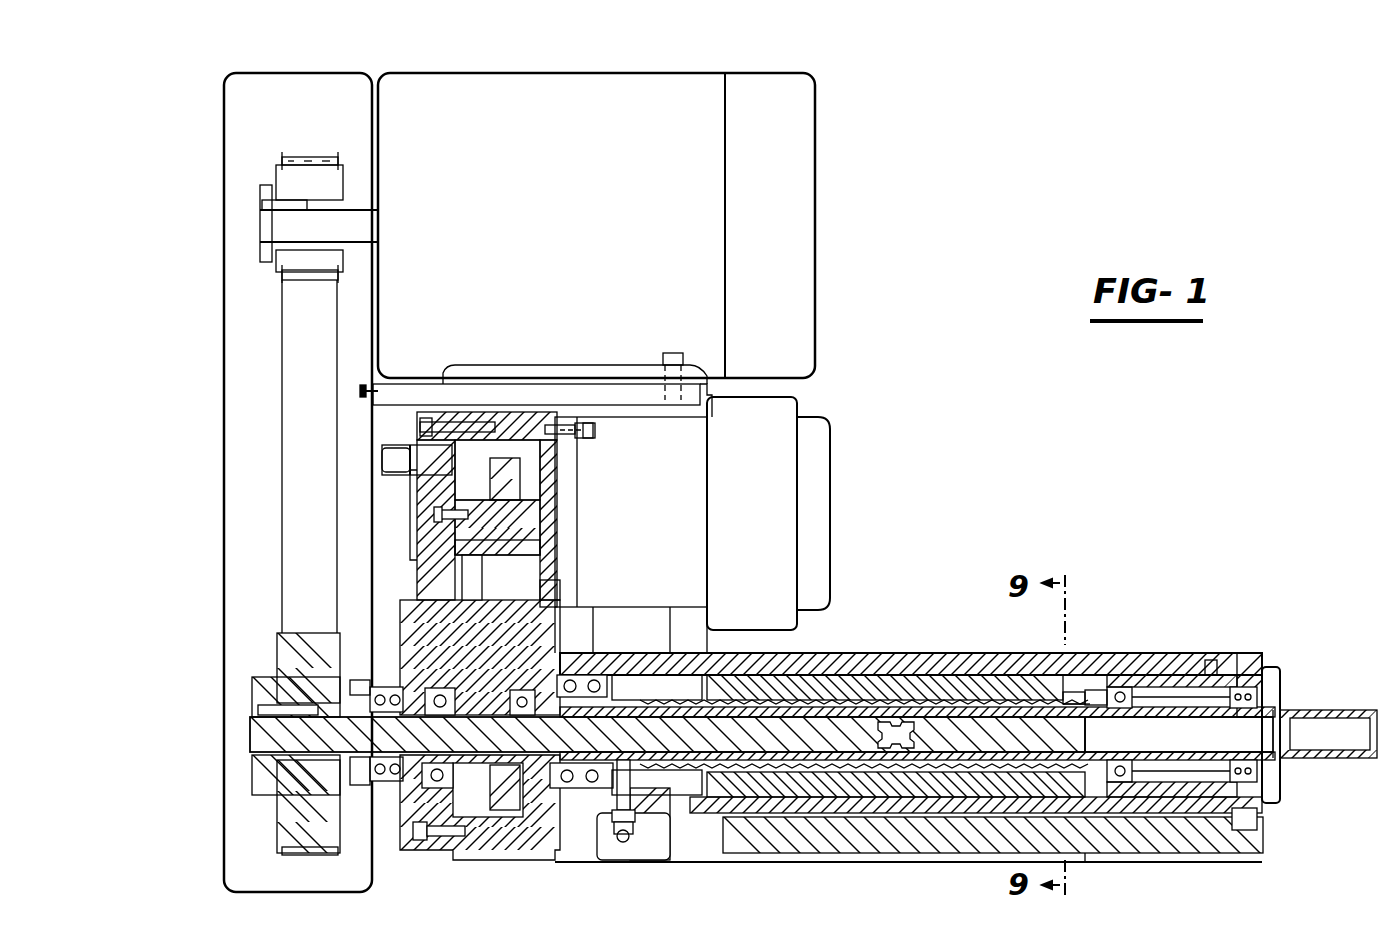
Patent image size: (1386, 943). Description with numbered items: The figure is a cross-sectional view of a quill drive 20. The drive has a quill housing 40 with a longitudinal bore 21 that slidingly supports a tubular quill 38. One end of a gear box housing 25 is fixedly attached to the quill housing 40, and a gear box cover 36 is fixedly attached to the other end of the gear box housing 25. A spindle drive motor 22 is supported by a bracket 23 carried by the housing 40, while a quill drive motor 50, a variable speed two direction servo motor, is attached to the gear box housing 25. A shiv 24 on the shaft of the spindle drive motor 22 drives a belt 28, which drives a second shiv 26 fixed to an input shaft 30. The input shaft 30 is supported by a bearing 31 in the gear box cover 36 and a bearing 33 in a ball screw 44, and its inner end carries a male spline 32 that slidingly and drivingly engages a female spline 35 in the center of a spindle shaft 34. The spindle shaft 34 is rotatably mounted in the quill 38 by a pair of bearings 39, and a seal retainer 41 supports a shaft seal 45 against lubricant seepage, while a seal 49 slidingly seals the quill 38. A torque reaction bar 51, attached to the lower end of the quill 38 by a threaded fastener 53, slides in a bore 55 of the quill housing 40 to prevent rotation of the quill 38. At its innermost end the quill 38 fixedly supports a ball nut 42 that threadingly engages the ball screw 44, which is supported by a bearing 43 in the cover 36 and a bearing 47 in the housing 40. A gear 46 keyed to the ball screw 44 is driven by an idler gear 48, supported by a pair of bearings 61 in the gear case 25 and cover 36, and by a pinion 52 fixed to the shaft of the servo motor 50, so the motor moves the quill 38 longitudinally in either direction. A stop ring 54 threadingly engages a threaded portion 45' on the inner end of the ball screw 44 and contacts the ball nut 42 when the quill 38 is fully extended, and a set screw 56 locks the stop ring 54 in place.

The quill drive 20 is at (862, 318).
The longitudinal bore 21 is at (860, 676).
The spindle drive motor 22 is at (800, 197).
The bracket 23 is at (700, 389).
The shiv 24 is at (290, 190).
The gear box housing 25 is at (470, 420).
The second shiv 26 is at (285, 657).
The belt 28 is at (290, 336).
The input shaft 30 is at (262, 745).
The bearing 31 is at (392, 757).
The male spline 32 is at (900, 730).
The bearing 33 is at (580, 770).
The spindle shaft 34 is at (1098, 717).
The female spline 35 is at (625, 672).
The gear box cover 36 is at (420, 580).
The quill 38 is at (1185, 678).
The bearings 39 is at (1230, 704).
The quill housing 40 is at (1008, 668).
The seal retainer 41 is at (1280, 690).
The ball nut 42 is at (695, 672).
The bearing 43 is at (418, 810).
The ball screw 44 is at (812, 700).
The shaft seal 45 is at (1284, 725).
The threaded portion 45' is at (1123, 663).
The gear 46 is at (505, 800).
The bearing 47 is at (590, 790).
The idler gear 48 is at (490, 585).
The seal 49 is at (498, 768).
The quill drive motor 50 is at (785, 516).
The torque reaction bar 51 is at (1145, 845).
The pinion 52 is at (452, 560).
The threaded fastener 53 is at (1252, 833).
The stop ring 54 is at (1075, 697).
The bore 55 is at (1115, 860).
The set screw 56 is at (1090, 700).
The bearings 61 is at (558, 584).